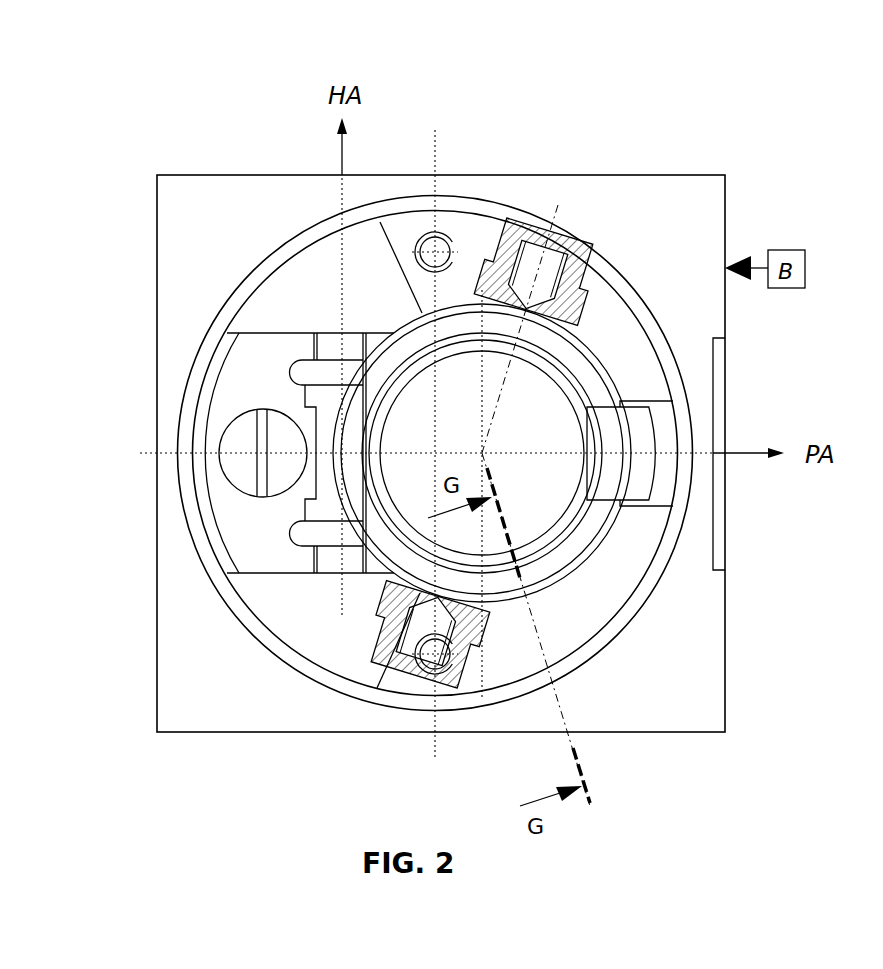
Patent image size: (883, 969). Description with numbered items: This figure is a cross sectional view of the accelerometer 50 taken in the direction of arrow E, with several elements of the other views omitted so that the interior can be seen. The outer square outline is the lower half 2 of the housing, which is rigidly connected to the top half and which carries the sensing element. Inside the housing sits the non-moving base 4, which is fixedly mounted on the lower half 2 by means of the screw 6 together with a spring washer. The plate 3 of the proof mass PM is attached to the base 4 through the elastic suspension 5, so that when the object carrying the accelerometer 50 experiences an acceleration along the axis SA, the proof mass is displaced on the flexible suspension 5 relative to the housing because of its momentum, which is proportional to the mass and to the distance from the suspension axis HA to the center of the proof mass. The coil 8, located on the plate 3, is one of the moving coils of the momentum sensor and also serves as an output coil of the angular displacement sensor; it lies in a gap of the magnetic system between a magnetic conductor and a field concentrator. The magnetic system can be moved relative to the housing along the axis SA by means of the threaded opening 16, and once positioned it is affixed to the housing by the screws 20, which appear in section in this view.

The accelerometer 50 is at (222, 76).
The lower half of the housing 2 is at (213, 641).
The plate 3 is at (632, 435).
The non-moving base 4 is at (275, 545).
The elastic suspension 5 is at (330, 562).
The screw 6 is at (242, 445).
The coil 8 is at (574, 507).
The threaded opening 16 is at (575, 361).
The screw 20 is at (532, 253).